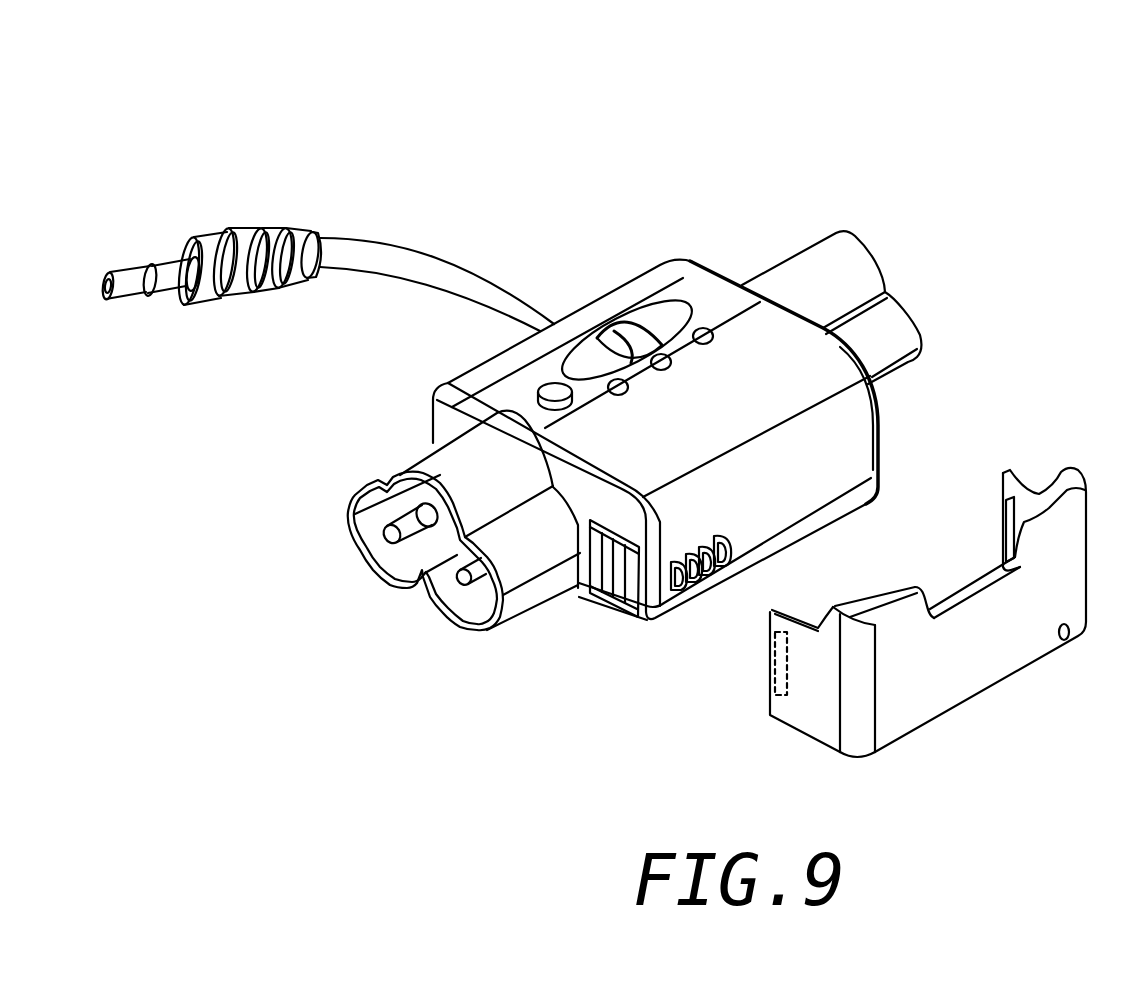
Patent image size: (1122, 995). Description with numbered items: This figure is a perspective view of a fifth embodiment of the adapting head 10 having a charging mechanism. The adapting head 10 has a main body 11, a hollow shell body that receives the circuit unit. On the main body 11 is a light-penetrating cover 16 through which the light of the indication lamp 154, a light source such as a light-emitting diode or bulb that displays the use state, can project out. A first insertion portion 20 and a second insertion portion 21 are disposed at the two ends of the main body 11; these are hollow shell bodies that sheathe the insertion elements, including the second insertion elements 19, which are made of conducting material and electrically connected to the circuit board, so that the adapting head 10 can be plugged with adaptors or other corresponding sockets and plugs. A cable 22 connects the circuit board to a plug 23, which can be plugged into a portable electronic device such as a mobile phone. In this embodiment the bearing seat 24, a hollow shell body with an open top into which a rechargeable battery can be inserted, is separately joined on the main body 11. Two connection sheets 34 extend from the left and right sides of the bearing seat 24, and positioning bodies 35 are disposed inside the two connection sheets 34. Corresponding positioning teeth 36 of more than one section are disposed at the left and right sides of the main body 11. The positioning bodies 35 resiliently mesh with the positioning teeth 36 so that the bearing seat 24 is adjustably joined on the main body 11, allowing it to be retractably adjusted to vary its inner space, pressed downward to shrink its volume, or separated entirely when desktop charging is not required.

The adapting head 10 is at (612, 172).
The main body 11 is at (733, 258).
The indication lamp 154 is at (770, 267).
The light-penetrating cover 16 is at (630, 335).
The second insertion elements 19 is at (462, 583).
The first insertion portion 20 is at (883, 318).
The second insertion portion 21 is at (545, 598).
The cable 22 is at (357, 257).
The plug 23 is at (152, 278).
The bearing seat 24 is at (963, 690).
The connection sheets 34 is at (1028, 480).
The positioning bodies 35 is at (1010, 530).
The positioning teeth 36 is at (645, 620).